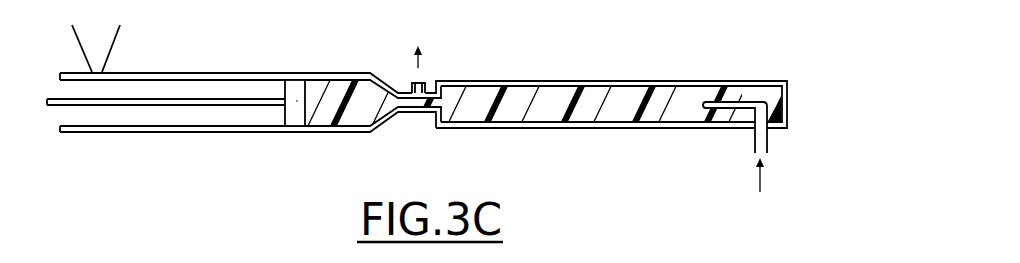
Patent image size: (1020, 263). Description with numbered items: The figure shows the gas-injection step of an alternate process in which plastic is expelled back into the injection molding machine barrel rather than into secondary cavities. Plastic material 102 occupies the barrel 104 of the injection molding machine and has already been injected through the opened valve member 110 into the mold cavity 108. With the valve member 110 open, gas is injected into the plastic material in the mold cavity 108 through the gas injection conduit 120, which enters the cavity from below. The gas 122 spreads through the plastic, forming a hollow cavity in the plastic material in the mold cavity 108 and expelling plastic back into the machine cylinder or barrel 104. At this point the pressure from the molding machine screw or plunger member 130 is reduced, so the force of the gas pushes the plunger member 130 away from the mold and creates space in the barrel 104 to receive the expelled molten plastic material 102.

The plastic material 102 is at (598, 95).
The barrel 104 is at (248, 72).
The mold cavity 108 is at (677, 80).
The valve member 110 is at (413, 82).
The gas injection conduit 120 is at (764, 143).
The gas 122 is at (737, 100).
The plunger member 130 is at (297, 118).